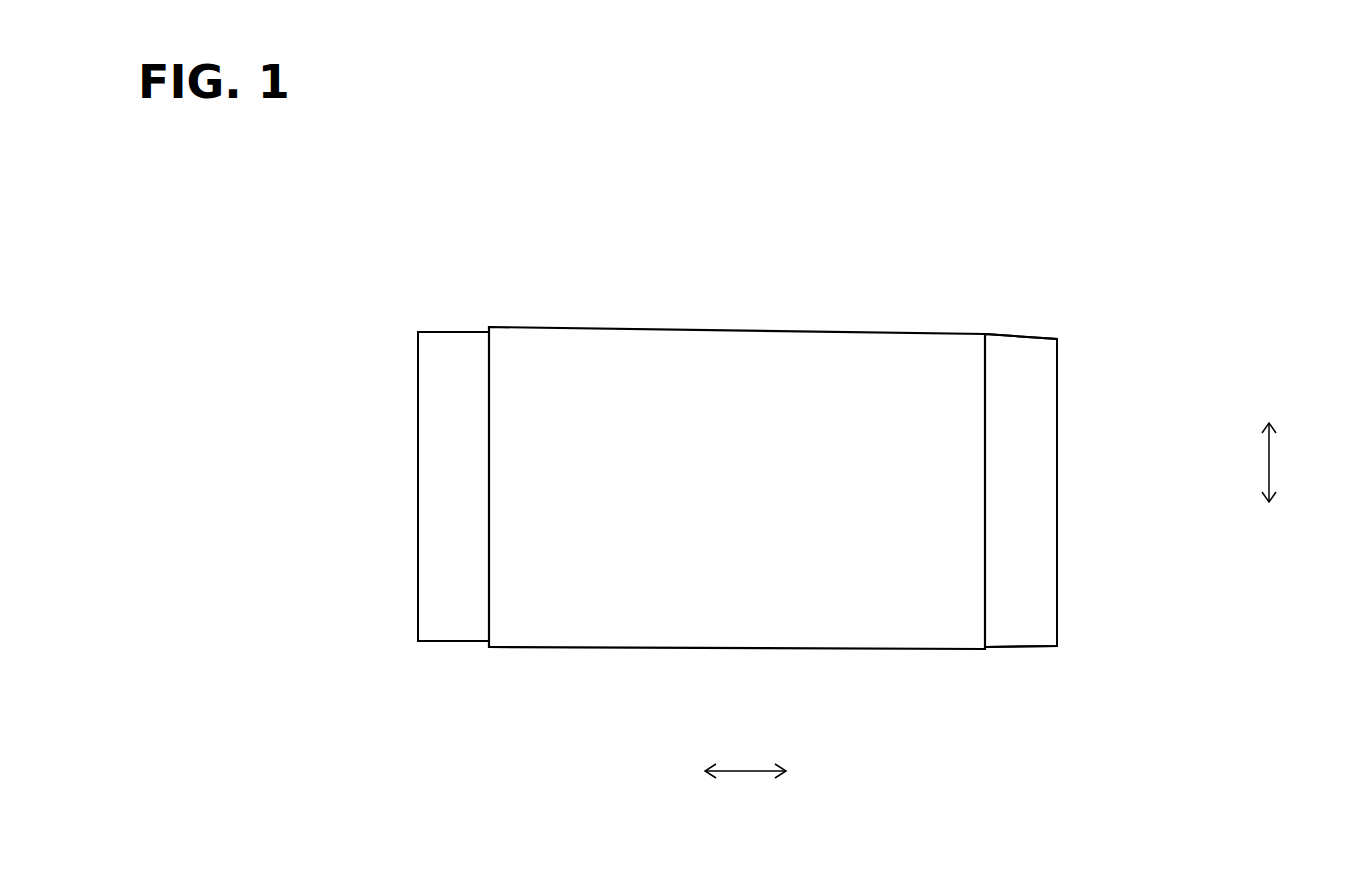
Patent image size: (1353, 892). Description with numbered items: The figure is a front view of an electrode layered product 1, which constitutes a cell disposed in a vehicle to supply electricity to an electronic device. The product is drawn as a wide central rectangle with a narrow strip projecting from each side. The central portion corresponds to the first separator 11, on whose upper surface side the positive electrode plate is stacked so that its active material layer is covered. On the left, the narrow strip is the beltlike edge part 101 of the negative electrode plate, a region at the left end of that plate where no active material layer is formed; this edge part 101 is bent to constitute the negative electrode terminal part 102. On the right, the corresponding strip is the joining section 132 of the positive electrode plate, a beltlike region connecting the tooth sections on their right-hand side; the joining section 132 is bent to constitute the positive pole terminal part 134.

The electrode layered product 1 is at (823, 234).
The first separator 11 is at (866, 362).
The edge part 101 is at (440, 381).
The negative electrode terminal part 102 is at (447, 476).
The joining section 132 is at (1032, 411).
The positive pole terminal part 134 is at (1032, 486).